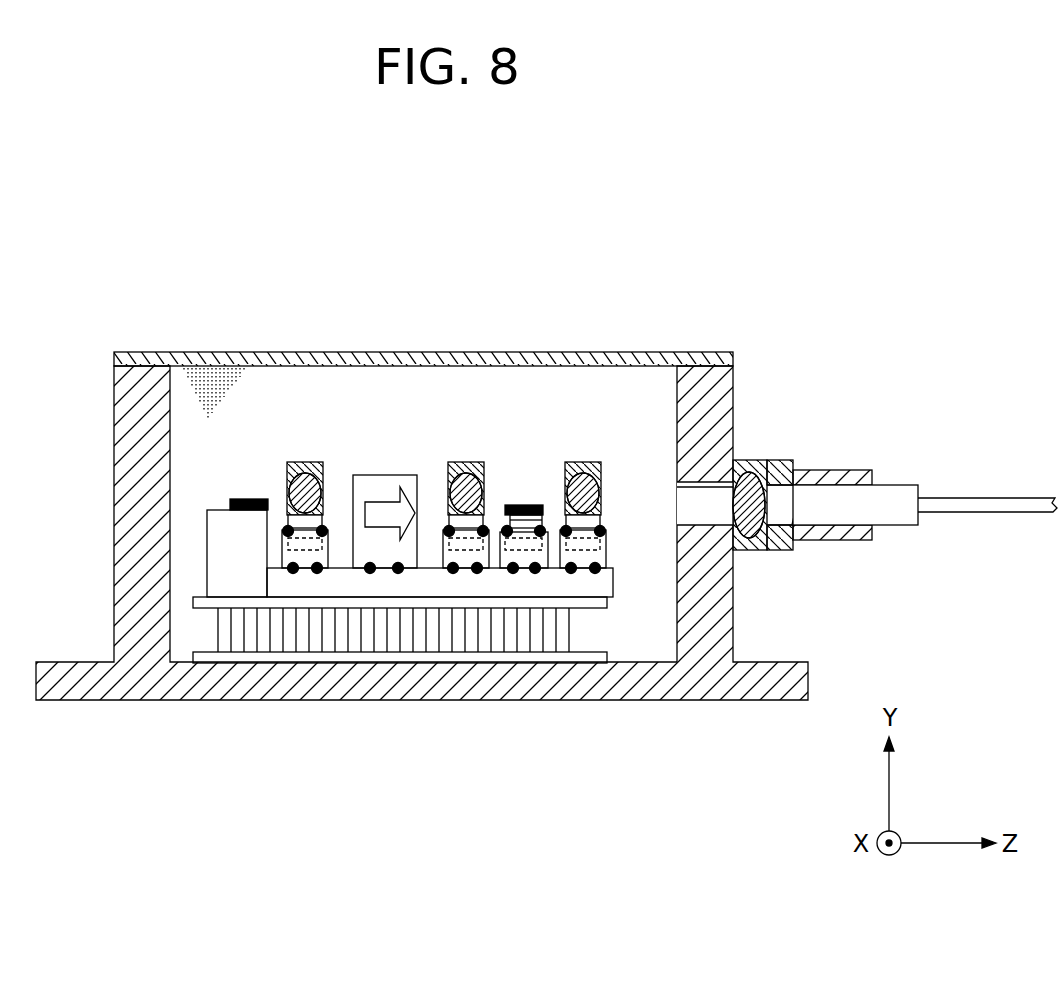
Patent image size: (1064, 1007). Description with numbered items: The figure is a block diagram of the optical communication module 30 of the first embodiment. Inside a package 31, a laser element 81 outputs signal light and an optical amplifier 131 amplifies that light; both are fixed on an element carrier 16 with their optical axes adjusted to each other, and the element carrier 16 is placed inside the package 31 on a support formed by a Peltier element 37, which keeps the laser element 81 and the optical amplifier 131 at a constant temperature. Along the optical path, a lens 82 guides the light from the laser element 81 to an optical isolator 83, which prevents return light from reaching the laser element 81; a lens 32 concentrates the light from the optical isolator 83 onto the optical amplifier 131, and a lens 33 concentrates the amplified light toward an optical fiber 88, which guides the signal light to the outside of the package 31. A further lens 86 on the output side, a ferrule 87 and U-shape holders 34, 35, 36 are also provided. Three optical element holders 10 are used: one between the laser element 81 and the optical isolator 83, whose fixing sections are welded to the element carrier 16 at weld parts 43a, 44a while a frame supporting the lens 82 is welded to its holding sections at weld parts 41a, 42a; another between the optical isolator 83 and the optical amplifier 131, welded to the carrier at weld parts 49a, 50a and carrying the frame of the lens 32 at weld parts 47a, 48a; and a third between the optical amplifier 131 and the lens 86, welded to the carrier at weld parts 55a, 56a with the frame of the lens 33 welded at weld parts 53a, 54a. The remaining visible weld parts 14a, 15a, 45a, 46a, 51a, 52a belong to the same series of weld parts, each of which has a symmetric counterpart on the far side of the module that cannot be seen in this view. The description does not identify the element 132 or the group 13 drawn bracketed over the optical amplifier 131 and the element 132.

The optical element holder 10 is at (480, 528).
The optical component 13 is at (513, 197).
The weld part 14a is at (514, 574).
The weld part 15a is at (535, 574).
The element carrier 16 is at (217, 533).
The optical communication module 30 is at (851, 252).
The package 31 is at (113, 604).
The lens 32 is at (448, 462).
The lens 33 is at (604, 522).
The U-shape holder 34 is at (347, 553).
The U-shape holder 35 is at (444, 526).
The U-shape holder 36 is at (613, 582).
The Peltier element 37 is at (238, 630).
The weld part 41a is at (288, 531).
The weld part 42a is at (322, 531).
The weld part 43a is at (292, 574).
The weld part 44a is at (316, 574).
The weld part 45a is at (369, 574).
The weld part 46a is at (397, 574).
The weld part 47a is at (450, 528).
The weld part 48a is at (460, 462).
The weld part 49a is at (453, 574).
The weld part 50a is at (477, 574).
The weld part 51a is at (514, 504).
The weld part 52a is at (565, 460).
The weld part 53a is at (569, 527).
The weld part 54a is at (611, 528).
The weld part 55a is at (571, 574).
The weld part 56a is at (594, 574).
The laser element 81 is at (243, 498).
The lens 82 is at (298, 461).
The optical isolator 83 is at (363, 470).
The lens 86 is at (756, 460).
The ferrule 87 is at (893, 485).
The optical fiber 88 is at (995, 498).
The optical amplifier 131 is at (546, 526).
The optical element support 132 is at (523, 504).